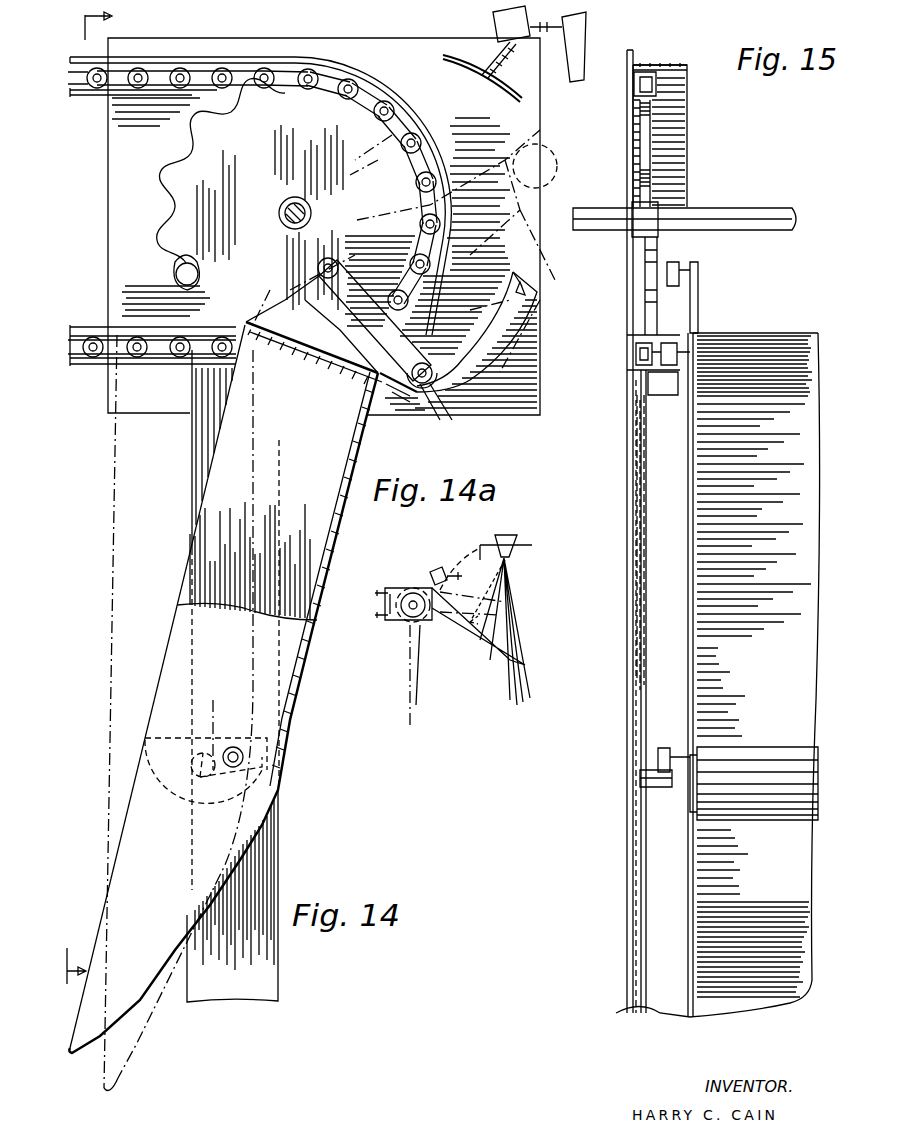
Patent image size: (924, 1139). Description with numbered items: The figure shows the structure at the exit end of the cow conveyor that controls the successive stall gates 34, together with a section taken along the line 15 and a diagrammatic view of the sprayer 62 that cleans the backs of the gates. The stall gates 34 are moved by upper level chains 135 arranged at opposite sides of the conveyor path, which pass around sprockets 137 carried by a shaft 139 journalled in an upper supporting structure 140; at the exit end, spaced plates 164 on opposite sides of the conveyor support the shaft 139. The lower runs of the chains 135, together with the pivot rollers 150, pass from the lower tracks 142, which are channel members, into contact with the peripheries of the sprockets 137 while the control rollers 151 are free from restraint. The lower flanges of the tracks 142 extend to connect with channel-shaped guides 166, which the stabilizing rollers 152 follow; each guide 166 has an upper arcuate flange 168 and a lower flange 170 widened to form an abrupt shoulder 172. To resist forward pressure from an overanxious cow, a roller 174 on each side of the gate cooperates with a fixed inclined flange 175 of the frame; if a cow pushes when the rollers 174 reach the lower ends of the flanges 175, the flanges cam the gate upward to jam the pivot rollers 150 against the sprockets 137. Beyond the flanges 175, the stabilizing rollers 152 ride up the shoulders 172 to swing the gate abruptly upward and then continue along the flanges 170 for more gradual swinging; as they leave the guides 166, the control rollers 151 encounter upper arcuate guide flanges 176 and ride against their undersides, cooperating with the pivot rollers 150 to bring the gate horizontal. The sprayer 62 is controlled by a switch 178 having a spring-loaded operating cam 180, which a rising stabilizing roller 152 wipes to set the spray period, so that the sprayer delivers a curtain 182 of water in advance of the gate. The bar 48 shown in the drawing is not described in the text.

In FIG. 14, the section line 15— 15 is at (77, 550).
In FIG. 14, the stall gate 34 is at (322, 596).
In FIG. 14A, the stall gate 34 is at (520, 645).
In FIG. 15, the stall gate 34 is at (692, 600).
In FIG. 14, the bar 48 is at (165, 800).
In FIG. 15, the bar 48 is at (760, 748).
In FIG. 14, the sprayer 62 is at (590, 32).
In FIG. 14A, the sprayer 62 is at (519, 546).
In FIG. 14, the upper level chain 135 is at (82, 80).
In FIG. 14A, the upper level chain 135 is at (392, 590).
In FIG. 15, the upper level chain 135 is at (634, 88).
In FIG. 14, the sprocket 137 is at (185, 150).
In FIG. 15, the sprocket 137 is at (690, 140).
In FIG. 14, the shaft 139 is at (308, 203).
In FIG. 15, the shaft 139 is at (740, 208).
In FIG. 15, the upper supporting structure 140 is at (628, 440).
In FIG. 14, the lower track 142 is at (95, 366).
In FIG. 14, the pivot roller 150 is at (378, 268).
In FIG. 14, the control roller 151 is at (392, 135).
In FIG. 15, the control roller 151 is at (672, 262).
In FIG. 14, the stabilizing roller 152 is at (528, 150).
In FIG. 15, the stabilizing roller 152 is at (670, 343).
In FIG. 14, the spaced plate 164 is at (541, 135).
In FIG. 14A, the spaced plate 164 is at (395, 622).
In FIG. 15, the spaced plate 164 is at (627, 63).
In FIG. 14, the channel-shaped guide 166 is at (532, 282).
In FIG. 14, the upper arcuate flange 168 is at (387, 398).
In FIG. 14, the lower flange 170 is at (540, 318).
In FIG. 14, the abrupt shoulder 172 is at (445, 415).
In FIG. 14, the roller 174 is at (233, 747).
In FIG. 15, the roller 174 is at (662, 748).
In FIG. 14, the inclined flange 175 is at (262, 770).
In FIG. 15, the inclined flange 175 is at (658, 788).
In FIG. 14, the upper arcuate guide flange 176 is at (385, 110).
In FIG. 15, the upper arcuate guide flange 176 is at (687, 68).
In FIG. 14, the switch 178 is at (492, 22).
In FIG. 14A, the switch 178 is at (445, 562).
In FIG. 14, the spring-loaded operating cam 180 is at (490, 85).
In FIG. 14A, the curtain of water 182 is at (528, 685).